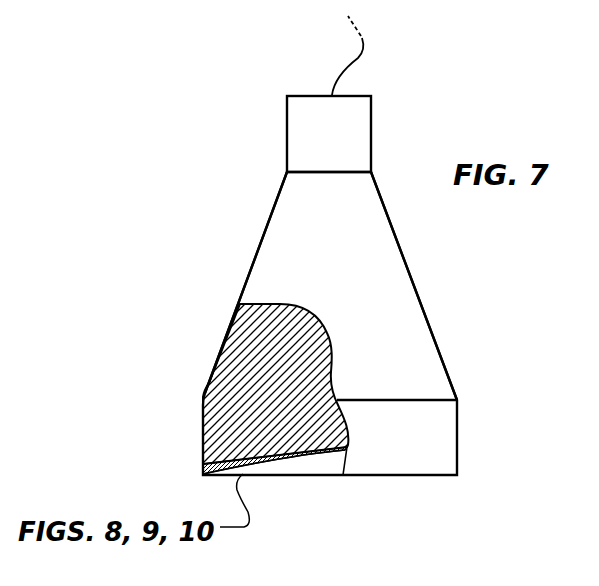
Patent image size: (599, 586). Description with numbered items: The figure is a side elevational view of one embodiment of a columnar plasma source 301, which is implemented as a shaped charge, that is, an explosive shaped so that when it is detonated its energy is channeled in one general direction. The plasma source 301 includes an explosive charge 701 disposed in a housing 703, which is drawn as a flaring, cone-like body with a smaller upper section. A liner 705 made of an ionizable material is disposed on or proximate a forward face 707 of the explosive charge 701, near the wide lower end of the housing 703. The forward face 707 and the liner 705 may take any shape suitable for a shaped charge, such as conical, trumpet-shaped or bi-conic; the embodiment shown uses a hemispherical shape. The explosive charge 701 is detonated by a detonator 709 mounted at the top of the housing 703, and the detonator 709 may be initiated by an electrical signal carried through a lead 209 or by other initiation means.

The plasma source 301 is at (233, 180).
The housing 703 is at (408, 301).
The detonator 709 is at (305, 118).
The lead 209 is at (363, 55).
The explosive charge 701 is at (237, 378).
The liner 705 is at (318, 455).
The forward face 707 is at (287, 453).